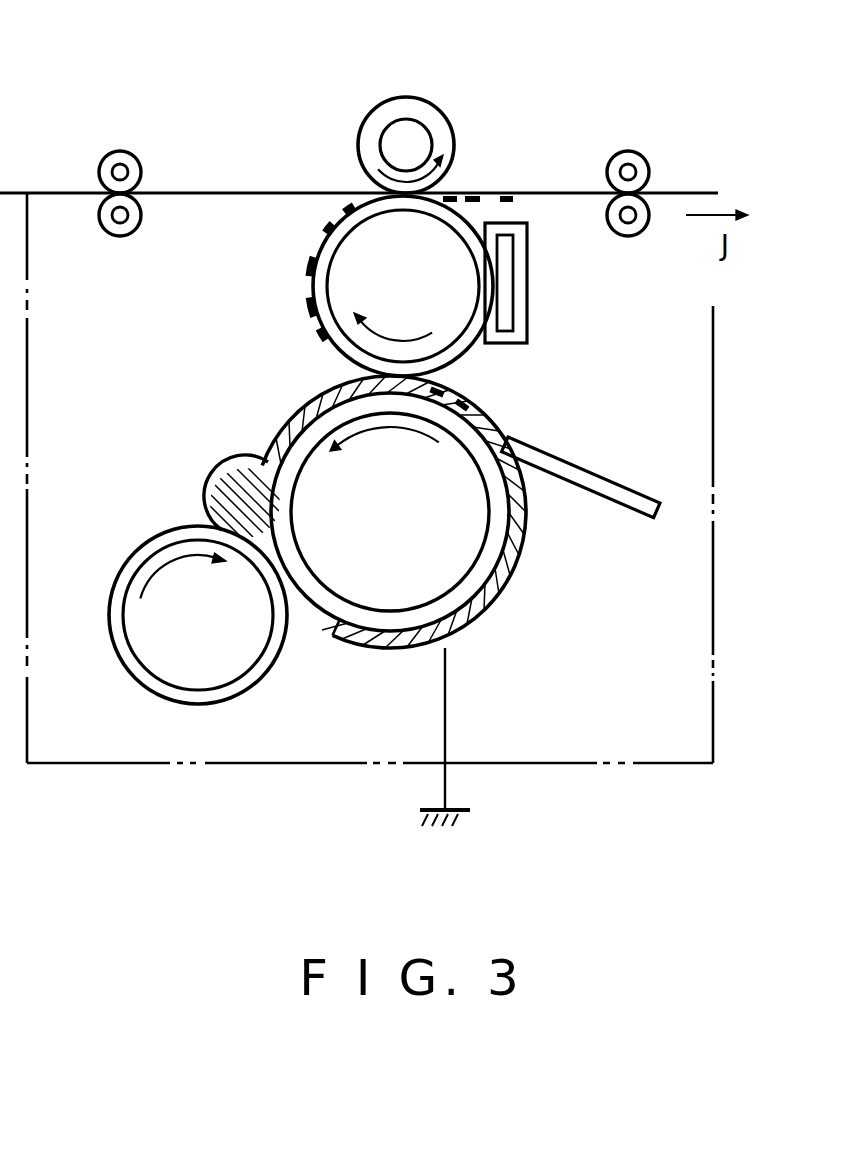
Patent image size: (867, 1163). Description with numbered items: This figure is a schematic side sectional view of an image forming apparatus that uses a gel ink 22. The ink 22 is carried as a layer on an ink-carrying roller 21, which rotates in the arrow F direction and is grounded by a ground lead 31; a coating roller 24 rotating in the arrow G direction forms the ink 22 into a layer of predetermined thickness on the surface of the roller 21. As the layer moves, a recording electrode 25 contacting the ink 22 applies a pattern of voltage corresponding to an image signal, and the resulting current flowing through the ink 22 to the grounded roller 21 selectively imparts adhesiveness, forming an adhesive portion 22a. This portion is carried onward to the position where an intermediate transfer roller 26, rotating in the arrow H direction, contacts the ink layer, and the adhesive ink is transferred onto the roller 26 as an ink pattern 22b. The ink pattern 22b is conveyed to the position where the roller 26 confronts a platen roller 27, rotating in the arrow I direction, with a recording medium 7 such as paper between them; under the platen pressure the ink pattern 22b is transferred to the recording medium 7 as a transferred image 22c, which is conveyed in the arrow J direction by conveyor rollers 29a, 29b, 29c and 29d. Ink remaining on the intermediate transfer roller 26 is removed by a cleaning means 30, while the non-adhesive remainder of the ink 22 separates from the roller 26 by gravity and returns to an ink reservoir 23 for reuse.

The recording medium 7 is at (540, 191).
The ink-carrying roller 21 is at (470, 442).
The ink 22 is at (336, 628).
The adhesive portion 22a is at (472, 392).
The ink pattern 22b is at (308, 265).
The transferred image 22c is at (514, 203).
The ink reservoir 23 is at (213, 500).
The coating roller 24 is at (136, 665).
The recording electrode 25 is at (640, 493).
The intermediate transfer roller 26 is at (309, 283).
The platen roller 27 is at (404, 96).
The conveyor roller 29a is at (628, 151).
The conveyor roller 29b is at (630, 236).
The conveyor roller 29c is at (121, 151).
The conveyor roller 29d is at (119, 236).
The cleaning means 30 is at (527, 300).
The ground lead 31 is at (445, 697).